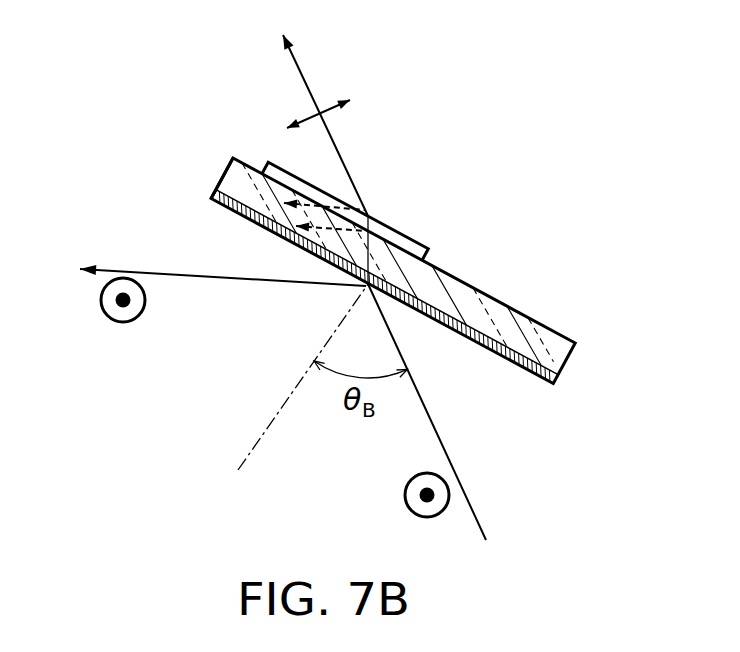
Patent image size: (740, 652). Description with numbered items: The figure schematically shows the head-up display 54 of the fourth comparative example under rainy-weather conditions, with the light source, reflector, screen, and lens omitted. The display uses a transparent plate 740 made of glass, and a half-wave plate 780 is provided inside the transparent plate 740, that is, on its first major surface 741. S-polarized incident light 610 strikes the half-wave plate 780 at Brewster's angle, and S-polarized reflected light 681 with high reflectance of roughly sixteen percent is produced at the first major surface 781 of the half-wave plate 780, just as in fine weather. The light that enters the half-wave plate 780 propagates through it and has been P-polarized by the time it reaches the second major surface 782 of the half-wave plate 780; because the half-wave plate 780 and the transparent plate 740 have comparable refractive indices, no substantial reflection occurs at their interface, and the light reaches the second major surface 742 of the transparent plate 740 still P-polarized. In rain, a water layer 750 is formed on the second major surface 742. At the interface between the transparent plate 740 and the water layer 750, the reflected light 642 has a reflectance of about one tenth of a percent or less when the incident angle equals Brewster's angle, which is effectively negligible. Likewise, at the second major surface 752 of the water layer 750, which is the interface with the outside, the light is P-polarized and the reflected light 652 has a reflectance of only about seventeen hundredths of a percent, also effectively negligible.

The head-up display 54 is at (577, 122).
The incident light 610 is at (477, 520).
The reflected light 642 is at (284, 203).
The reflected light 652 is at (296, 224).
The reflected light 681 is at (170, 275).
The transparent plate 740 is at (576, 348).
The first major surface 741 is at (560, 372).
The second major surface 742 is at (493, 298).
The water layer 750 is at (387, 227).
The second major surface 752 is at (368, 216).
The half-wave plate 780 is at (512, 361).
The first major surface 781 is at (211, 196).
The second major surface 782 is at (219, 181).